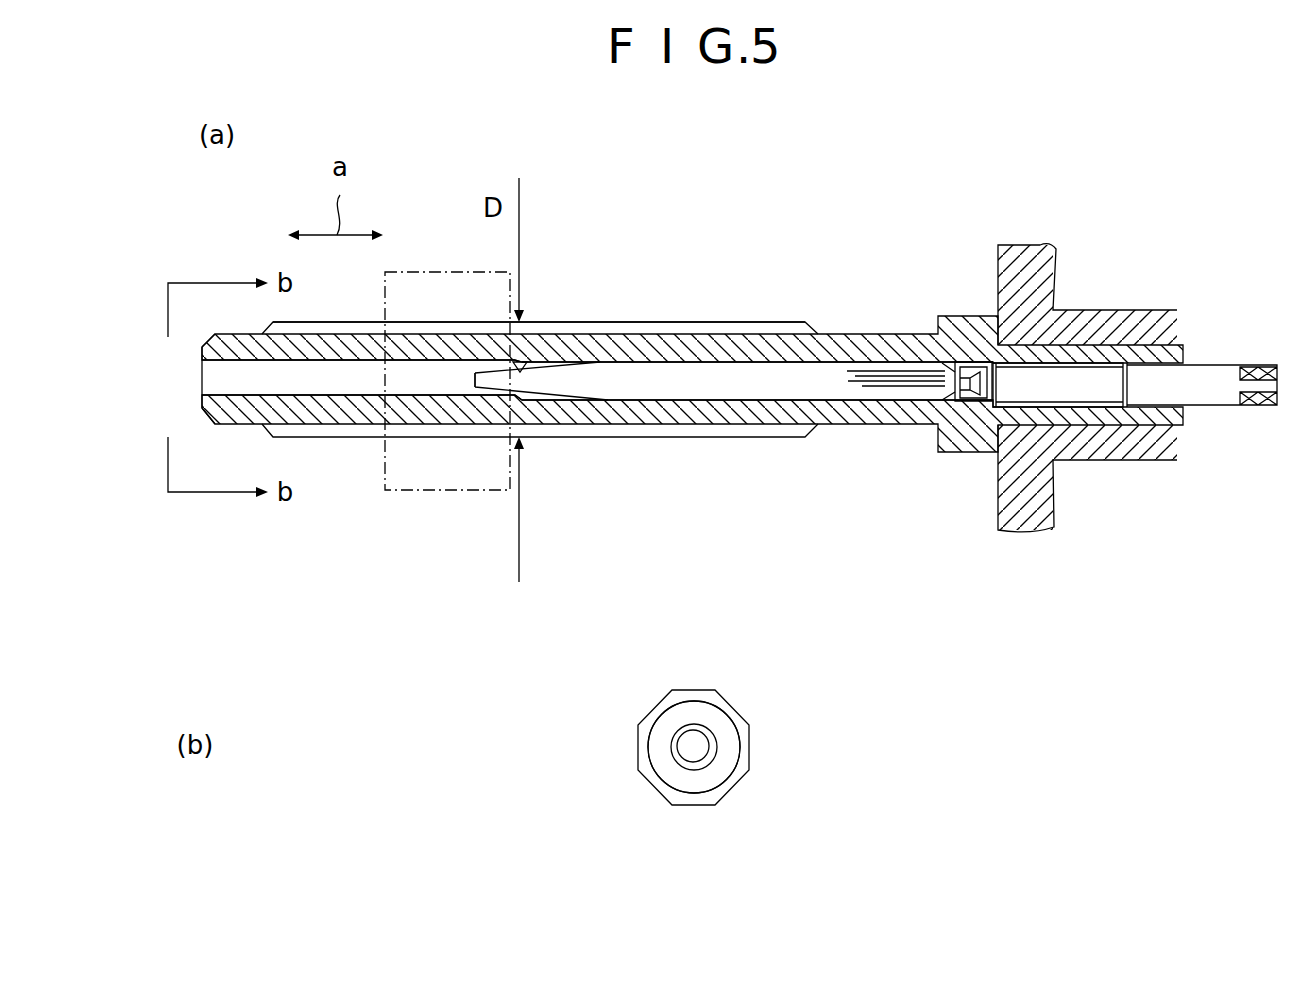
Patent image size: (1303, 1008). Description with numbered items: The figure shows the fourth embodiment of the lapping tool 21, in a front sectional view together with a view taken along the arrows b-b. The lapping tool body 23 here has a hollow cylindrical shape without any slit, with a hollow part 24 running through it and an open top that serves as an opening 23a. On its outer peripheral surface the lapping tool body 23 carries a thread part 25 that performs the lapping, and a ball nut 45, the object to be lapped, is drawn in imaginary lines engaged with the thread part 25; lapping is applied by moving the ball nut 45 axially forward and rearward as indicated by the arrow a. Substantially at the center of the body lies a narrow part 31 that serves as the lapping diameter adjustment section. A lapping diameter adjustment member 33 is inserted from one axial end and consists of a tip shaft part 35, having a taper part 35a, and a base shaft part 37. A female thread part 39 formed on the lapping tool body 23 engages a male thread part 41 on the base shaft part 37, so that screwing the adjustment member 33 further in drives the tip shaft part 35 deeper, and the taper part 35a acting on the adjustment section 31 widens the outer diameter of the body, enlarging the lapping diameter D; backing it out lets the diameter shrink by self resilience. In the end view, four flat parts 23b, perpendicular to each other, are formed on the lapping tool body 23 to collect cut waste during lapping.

The lapping tool 21 is at (641, 322).
The lapping tool body 23 is at (859, 334).
The opening 23a is at (236, 397).
The flat parts 23b is at (712, 690).
The hollow part 24 is at (312, 396).
The thread part 25 is at (441, 322).
The narrow part 31 is at (521, 390).
The lapping diameter adjustment member 33 is at (774, 380).
The tip shaft part 35 is at (641, 380).
The taper part 35a is at (473, 396).
The base shaft part 37 is at (1103, 388).
The female thread part 39 is at (1063, 363).
The male thread part 41 is at (998, 452).
The ball nut 45 is at (407, 270).